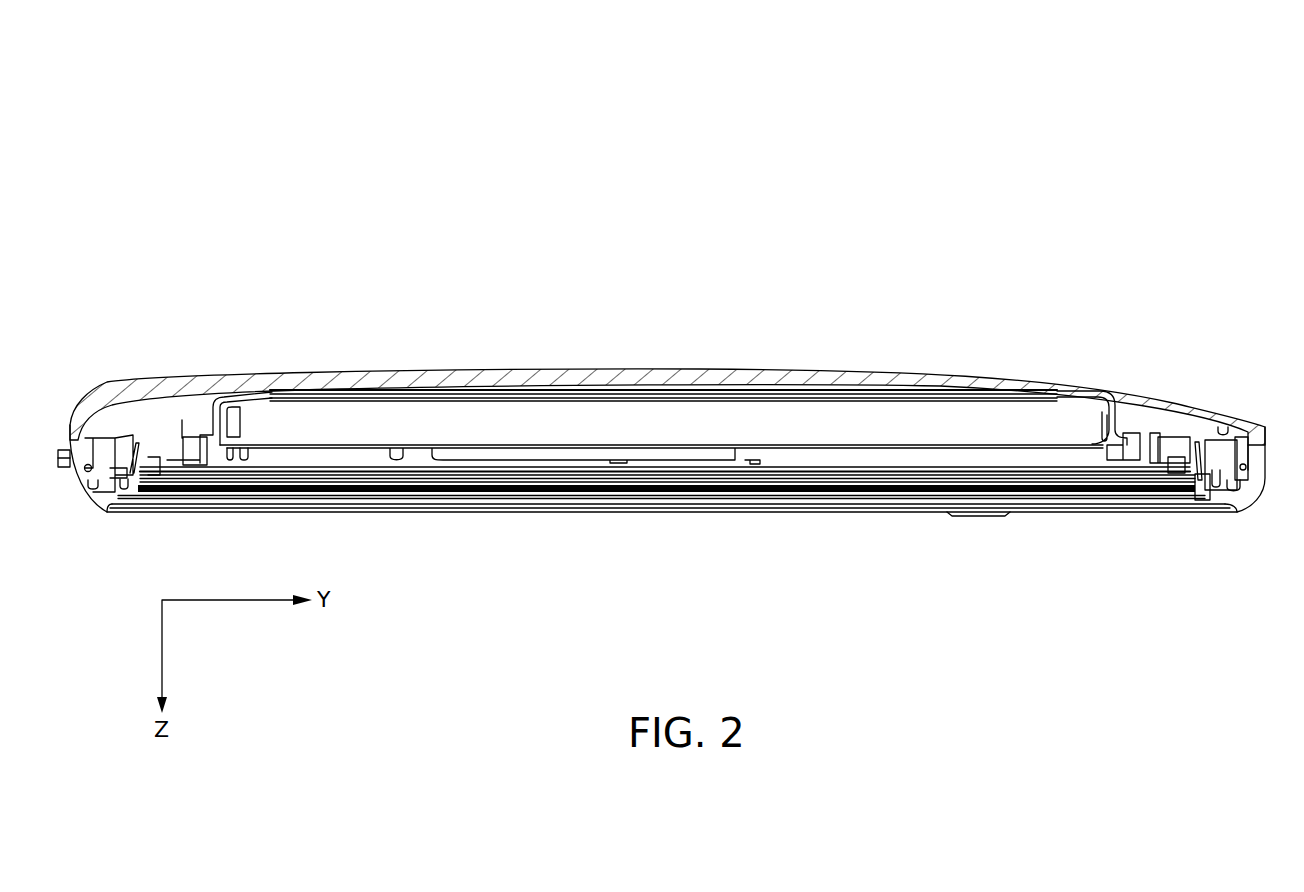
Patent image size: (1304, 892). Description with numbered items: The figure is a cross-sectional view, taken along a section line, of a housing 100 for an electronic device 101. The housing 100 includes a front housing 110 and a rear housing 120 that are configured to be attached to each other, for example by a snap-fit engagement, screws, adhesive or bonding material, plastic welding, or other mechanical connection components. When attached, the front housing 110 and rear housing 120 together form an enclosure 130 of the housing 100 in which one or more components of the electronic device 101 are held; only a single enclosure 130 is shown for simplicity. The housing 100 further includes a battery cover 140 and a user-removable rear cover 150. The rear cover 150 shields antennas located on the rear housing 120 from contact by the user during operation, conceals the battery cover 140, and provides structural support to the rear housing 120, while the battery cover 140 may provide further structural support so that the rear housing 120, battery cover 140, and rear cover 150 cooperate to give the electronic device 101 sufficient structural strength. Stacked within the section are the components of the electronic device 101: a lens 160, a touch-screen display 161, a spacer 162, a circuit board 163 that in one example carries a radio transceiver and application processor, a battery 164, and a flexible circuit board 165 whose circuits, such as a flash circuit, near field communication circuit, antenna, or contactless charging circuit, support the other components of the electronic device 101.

The housing 100 is at (1042, 180).
The electronic device 101 is at (452, 545).
The front housing 110 is at (1240, 500).
The rear housing 120 is at (1155, 412).
The enclosure 130 is at (512, 382).
The battery cover 140 is at (1136, 425).
The rear cover 150 is at (1200, 410).
The lens 160 is at (1153, 507).
The touch-screen display 161 is at (1104, 488).
The spacer 162 is at (1207, 500).
The circuit board 163 is at (908, 465).
The battery 164 is at (843, 425).
The flexible circuit board 165 is at (960, 398).